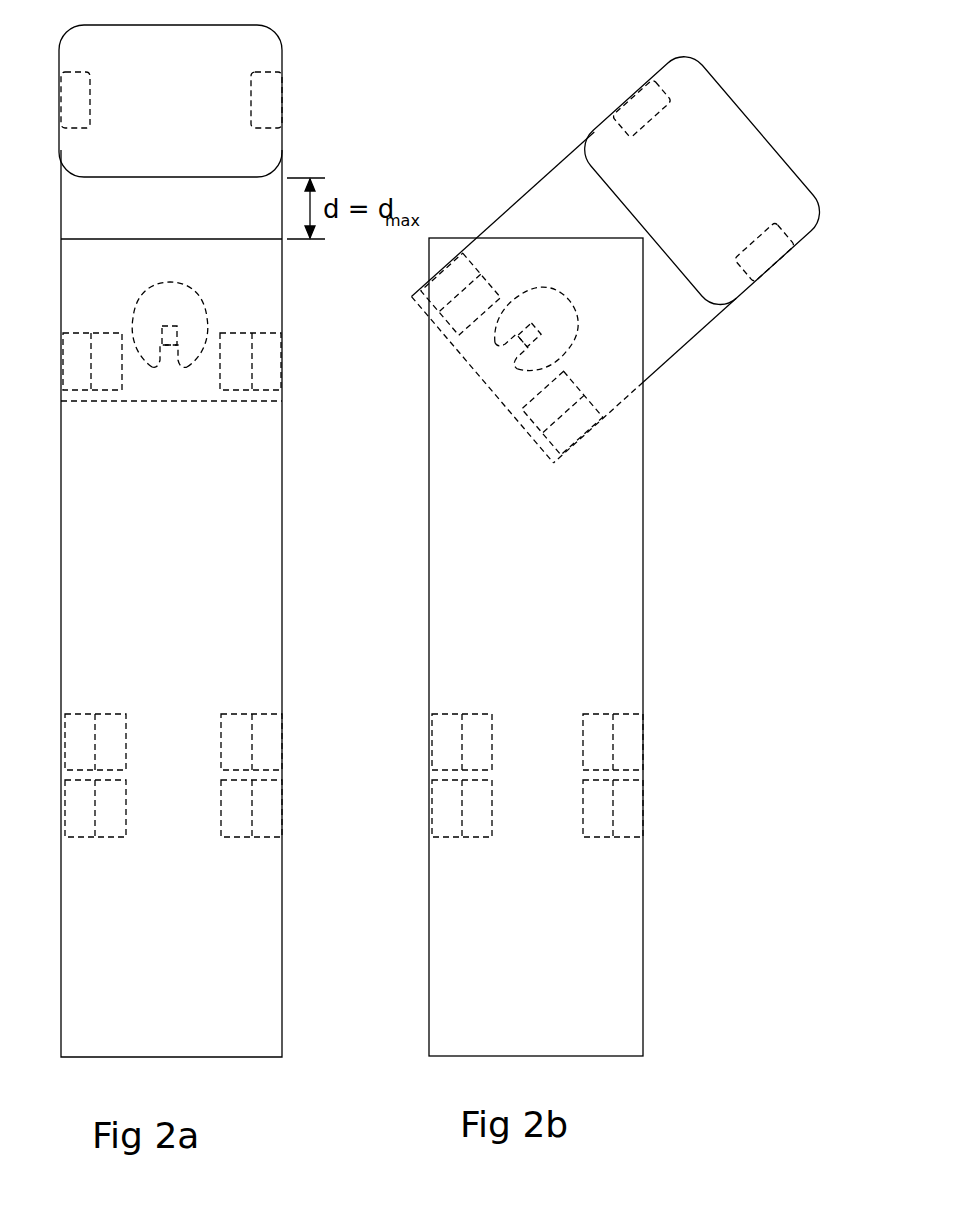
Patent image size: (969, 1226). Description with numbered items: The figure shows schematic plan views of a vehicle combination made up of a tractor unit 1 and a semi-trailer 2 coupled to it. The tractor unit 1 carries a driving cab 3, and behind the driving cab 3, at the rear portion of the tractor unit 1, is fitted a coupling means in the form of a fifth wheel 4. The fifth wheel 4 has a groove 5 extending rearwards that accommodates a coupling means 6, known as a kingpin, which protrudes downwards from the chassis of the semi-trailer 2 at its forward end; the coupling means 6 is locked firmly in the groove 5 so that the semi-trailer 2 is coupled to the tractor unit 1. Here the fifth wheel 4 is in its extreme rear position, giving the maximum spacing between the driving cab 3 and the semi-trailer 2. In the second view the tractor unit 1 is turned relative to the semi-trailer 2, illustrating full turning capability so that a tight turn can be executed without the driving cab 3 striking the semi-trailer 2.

In FIG. 2A, the tractor unit 1 is at (74, 198).
In FIG. 2B, the tractor unit 1 is at (552, 180).
In FIG. 2B, the semi-trailer 2 is at (638, 490).
In FIG. 2A, the driving cab 3 is at (268, 52).
In FIG. 2B, the driving cab 3 is at (798, 232).
In FIG. 2A, the fifth wheel 4 is at (150, 298).
In FIG. 2B, the fifth wheel 4 is at (545, 298).
In FIG. 2A, the groove 5 is at (170, 355).
In FIG. 2A, the coupling means 6 is at (174, 326).
In FIG. 2B, the coupling means 6 is at (538, 322).